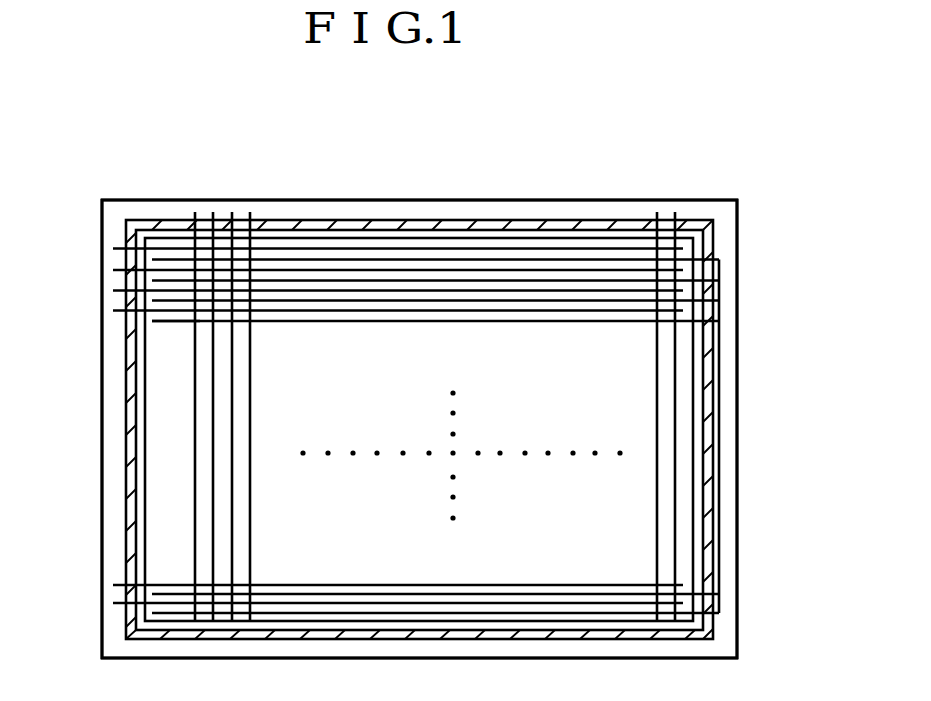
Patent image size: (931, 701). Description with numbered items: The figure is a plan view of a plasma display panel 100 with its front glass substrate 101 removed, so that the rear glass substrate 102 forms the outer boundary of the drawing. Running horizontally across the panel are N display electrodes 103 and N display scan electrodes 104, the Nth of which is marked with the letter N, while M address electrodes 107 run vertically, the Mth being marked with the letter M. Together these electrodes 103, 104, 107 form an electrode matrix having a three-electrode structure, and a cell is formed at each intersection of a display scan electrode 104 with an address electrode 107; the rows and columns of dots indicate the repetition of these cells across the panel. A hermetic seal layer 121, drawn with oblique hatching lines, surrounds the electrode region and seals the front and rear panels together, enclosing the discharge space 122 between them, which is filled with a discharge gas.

The plasma display panel 100 is at (737, 455).
The front glass substrate 101 is at (419, 429).
The rear glass substrate 102 is at (700, 200).
The display electrodes 103 is at (160, 322).
The display scan electrodes 104 is at (113, 248).
The address electrodes 107 is at (195, 214).
The hermetic seal layer 121 is at (405, 224).
The discharge space 122 is at (497, 350).